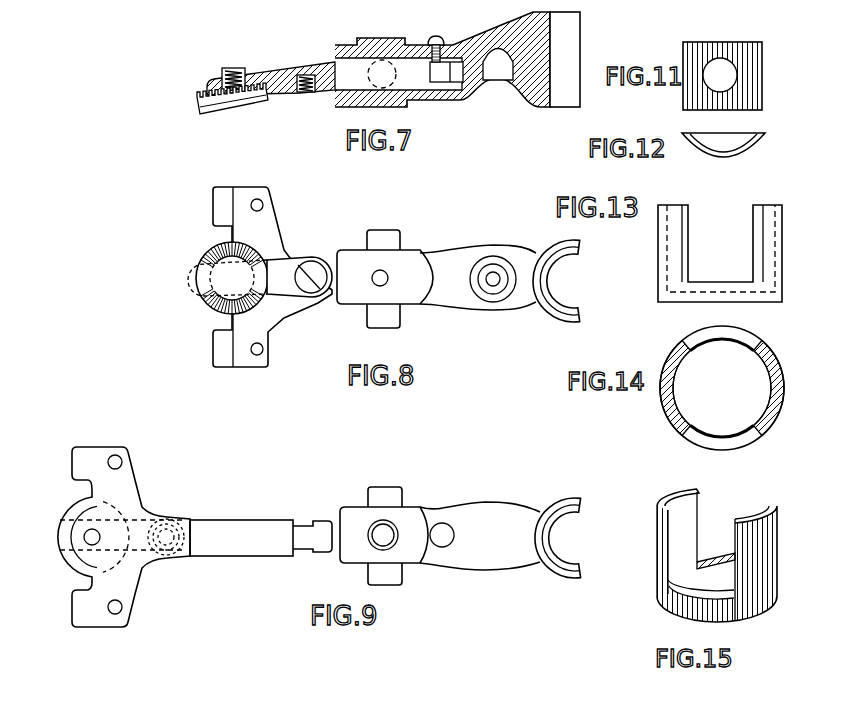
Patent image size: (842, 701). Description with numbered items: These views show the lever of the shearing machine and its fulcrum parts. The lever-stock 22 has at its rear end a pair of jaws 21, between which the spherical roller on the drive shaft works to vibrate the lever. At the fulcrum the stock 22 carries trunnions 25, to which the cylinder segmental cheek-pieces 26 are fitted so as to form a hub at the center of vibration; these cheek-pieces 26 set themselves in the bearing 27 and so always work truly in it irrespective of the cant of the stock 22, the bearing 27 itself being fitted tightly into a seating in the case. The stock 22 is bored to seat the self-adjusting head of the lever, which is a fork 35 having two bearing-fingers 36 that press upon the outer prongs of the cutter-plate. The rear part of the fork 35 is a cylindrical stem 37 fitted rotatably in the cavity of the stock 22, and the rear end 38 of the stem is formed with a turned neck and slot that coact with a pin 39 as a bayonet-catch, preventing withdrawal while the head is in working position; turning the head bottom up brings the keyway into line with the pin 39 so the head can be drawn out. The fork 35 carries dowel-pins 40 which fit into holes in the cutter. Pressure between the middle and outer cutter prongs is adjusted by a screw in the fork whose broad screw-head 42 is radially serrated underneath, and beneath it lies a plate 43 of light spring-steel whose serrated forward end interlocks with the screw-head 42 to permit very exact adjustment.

In FIG. 7, the jaws 21 is at (565, 59).
In FIG. 8, the jaws 21 is at (563, 307).
In FIG. 9, the jaws 21 is at (567, 562).
In FIG. 7, the lever-stock 22 is at (424, 102).
In FIG. 8, the lever-stock 22 is at (478, 277).
In FIG. 9, the lever-stock 22 is at (426, 507).
In FIG. 8, the trunnions 25 is at (396, 232).
In FIG. 9, the trunnions 25 is at (386, 487).
In FIG. 12, the cylinder segmental cheek-pieces 26 is at (744, 144).
In FIG. 15, the bearing 27 is at (692, 511).
In FIG. 9, the fork 35 is at (148, 570).
In FIG. 8, the bearing-fingers 36 is at (213, 203).
In FIG. 9, the bearing-fingers 36 is at (72, 463).
In FIG. 9, the cylindrical stem 37 is at (241, 538).
In FIG. 9, the rear end of the stem 38 is at (302, 552).
In FIG. 7, the pin 39 is at (436, 36).
In FIG. 8, the dowel-pins 40 is at (263, 205).
In FIG. 9, the dowel-pins 40 is at (122, 462).
In FIG. 8, the screw-head 42 is at (205, 297).
In FIG. 8, the plate 43 is at (283, 275).